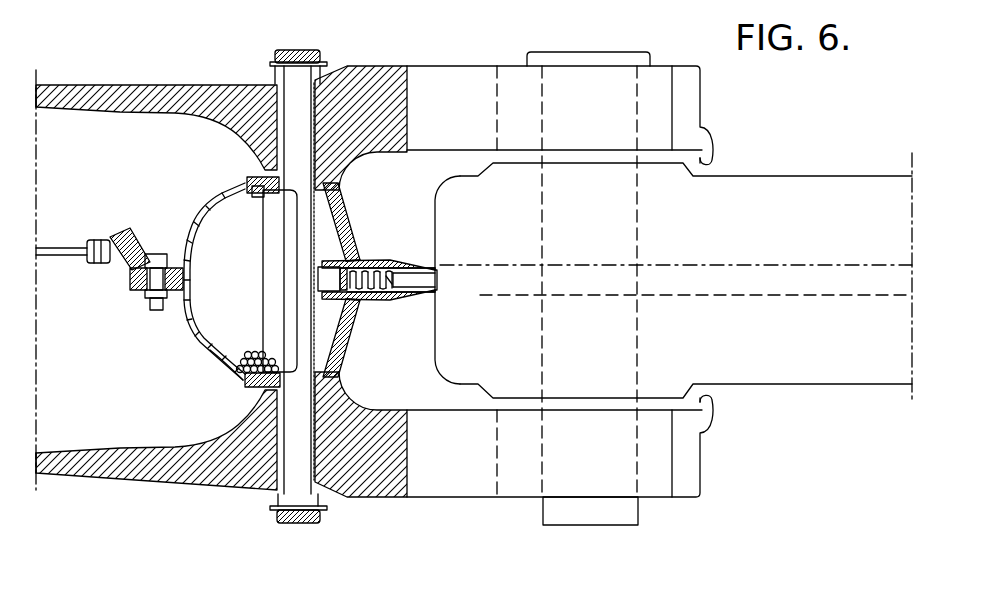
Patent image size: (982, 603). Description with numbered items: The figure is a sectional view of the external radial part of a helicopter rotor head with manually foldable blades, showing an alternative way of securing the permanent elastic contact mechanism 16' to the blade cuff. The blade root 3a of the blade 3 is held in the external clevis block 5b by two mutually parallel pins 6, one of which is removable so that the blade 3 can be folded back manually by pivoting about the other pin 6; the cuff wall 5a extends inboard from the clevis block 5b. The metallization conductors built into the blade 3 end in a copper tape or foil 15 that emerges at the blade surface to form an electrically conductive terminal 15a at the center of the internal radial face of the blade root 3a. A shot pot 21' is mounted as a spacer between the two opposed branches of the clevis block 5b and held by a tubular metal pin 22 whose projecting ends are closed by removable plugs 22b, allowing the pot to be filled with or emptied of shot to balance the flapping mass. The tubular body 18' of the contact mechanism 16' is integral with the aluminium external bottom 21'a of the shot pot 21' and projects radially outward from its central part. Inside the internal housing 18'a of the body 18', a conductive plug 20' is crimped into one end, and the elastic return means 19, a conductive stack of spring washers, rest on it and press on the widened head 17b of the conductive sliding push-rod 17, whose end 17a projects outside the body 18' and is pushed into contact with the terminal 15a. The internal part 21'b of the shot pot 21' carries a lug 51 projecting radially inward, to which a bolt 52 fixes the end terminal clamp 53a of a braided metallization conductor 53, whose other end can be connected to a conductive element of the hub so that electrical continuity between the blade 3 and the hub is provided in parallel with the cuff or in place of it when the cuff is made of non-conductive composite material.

The blade 3 is at (840, 166).
The blade root 3a is at (463, 378).
The housing wall 5a is at (110, 460).
The external clevis block 5b is at (393, 490).
The pin 6 is at (603, 243).
The copper tape or foil 15 is at (777, 280).
The electrically conductive terminal 15a is at (440, 292).
The permanent elastic contact mechanism 16' is at (397, 229).
The push-rod 17 is at (413, 278).
The axial end of the push-rod 17a is at (438, 300).
The widened head 17b is at (397, 262).
The tubular body 18' is at (375, 248).
The internal housing 18'a is at (415, 326).
The elastic return means 19 is at (353, 300).
The conductive plug 20' is at (265, 281).
The shot pot 21' is at (209, 217).
The external bottom 21'a is at (370, 274).
The internal part 21'b is at (200, 393).
The tubular metal pin 22 is at (316, 82).
The removable plug 22b is at (310, 53).
The lug 51 is at (130, 287).
The bolt 52 is at (147, 303).
The metallization conductor 53 is at (52, 238).
The end terminal clamp 53a is at (128, 238).